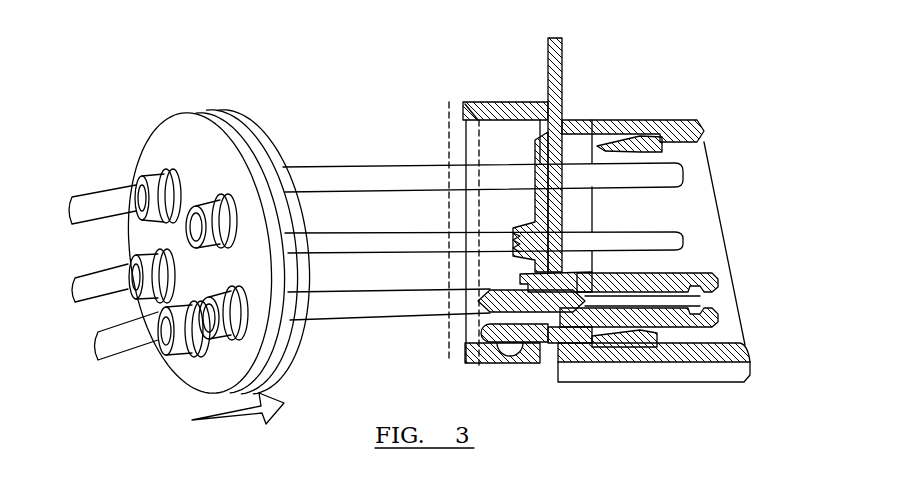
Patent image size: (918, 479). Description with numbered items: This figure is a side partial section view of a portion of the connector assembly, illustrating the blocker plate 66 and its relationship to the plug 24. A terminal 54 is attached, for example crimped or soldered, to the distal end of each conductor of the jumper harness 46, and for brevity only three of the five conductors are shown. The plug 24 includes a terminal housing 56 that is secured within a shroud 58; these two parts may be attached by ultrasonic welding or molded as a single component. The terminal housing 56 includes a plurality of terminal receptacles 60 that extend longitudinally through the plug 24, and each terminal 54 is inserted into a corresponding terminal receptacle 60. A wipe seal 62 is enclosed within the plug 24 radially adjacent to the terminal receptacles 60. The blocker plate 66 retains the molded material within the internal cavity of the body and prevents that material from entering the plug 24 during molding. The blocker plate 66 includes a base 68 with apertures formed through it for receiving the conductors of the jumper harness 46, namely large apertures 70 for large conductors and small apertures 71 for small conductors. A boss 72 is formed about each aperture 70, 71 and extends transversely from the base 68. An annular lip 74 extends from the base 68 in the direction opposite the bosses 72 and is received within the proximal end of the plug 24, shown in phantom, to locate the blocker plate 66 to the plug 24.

The plug 24 is at (730, 157).
The jumper harness 46 is at (358, 156).
The terminal 54 is at (677, 293).
The terminal housing 56 is at (560, 128).
The shroud 58 is at (622, 120).
The terminal receptacle 60 is at (712, 270).
The wipe seal 62 is at (645, 122).
The blocker plate 66 is at (159, 121).
The base 68 is at (157, 143).
The large aperture 70 is at (221, 196).
The small aperture 71 is at (244, 313).
The boss 72 is at (140, 254).
The annular lip 74 is at (265, 151).